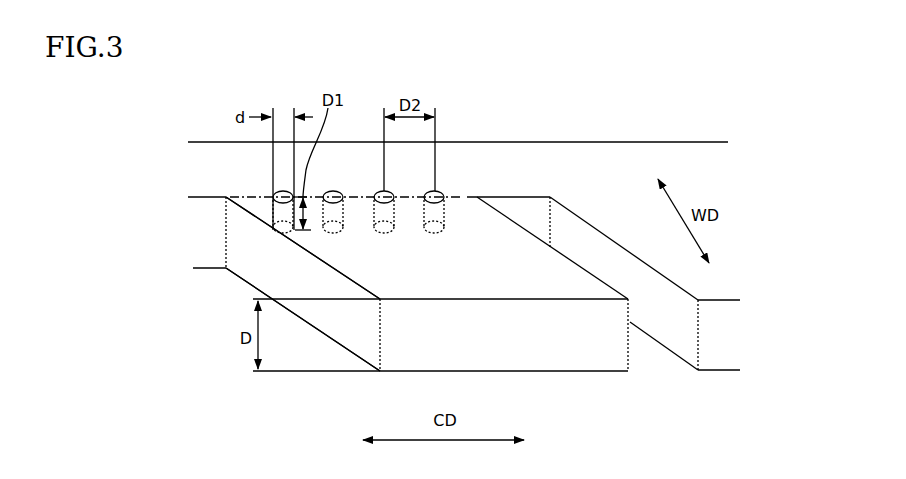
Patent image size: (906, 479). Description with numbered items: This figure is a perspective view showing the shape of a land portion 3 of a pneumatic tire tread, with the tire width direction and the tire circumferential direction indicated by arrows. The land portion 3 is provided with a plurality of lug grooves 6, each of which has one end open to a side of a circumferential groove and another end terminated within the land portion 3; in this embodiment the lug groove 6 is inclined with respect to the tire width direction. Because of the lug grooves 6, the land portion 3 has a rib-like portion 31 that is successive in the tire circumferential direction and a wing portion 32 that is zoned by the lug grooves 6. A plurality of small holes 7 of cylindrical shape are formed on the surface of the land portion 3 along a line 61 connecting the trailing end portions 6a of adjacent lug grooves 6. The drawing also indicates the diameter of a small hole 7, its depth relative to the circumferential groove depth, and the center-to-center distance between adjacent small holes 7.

The land portion 3 is at (180, 235).
The rib-like portion 31 is at (193, 171).
The wing portion 32 is at (292, 275).
The lug groove 6 is at (650, 347).
The trailing end portion 6a is at (210, 196).
The line 61 is at (455, 196).
The small hole 7 is at (334, 192).